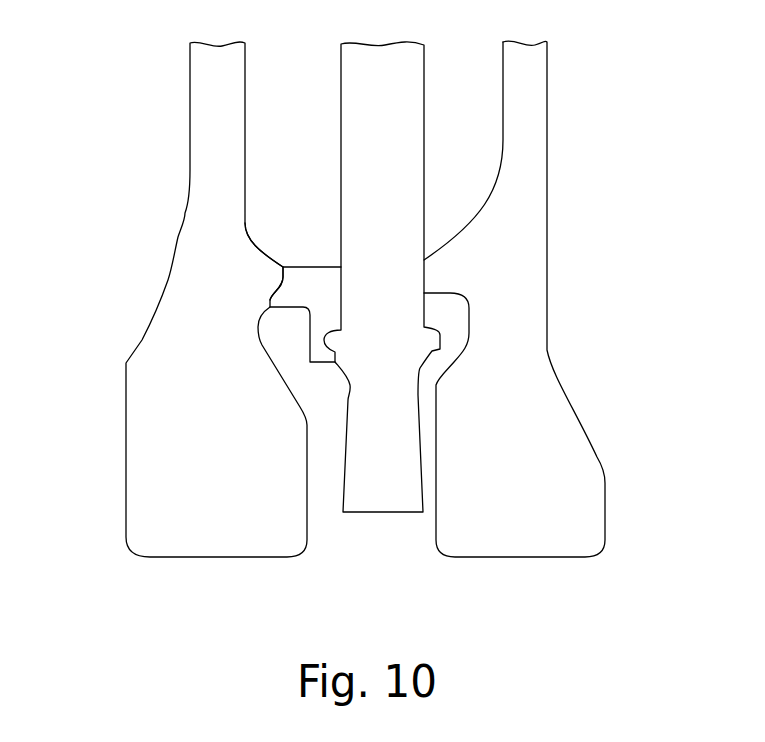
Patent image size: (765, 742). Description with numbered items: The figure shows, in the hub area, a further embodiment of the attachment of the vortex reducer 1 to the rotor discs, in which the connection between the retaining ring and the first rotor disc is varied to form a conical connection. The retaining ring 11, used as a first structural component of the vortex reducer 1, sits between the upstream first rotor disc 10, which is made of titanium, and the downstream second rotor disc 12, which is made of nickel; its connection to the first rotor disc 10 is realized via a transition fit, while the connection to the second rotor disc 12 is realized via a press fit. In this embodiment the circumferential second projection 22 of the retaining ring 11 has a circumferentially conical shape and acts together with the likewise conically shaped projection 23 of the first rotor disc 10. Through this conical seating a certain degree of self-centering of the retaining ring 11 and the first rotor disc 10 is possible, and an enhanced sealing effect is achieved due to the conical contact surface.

The vortex reducer 1 is at (380, 503).
The first rotor disc 10 is at (133, 478).
The retaining ring 11 is at (313, 278).
The second rotor disc 12 is at (585, 478).
The second projection 22 is at (278, 300).
The projection 23 is at (264, 272).